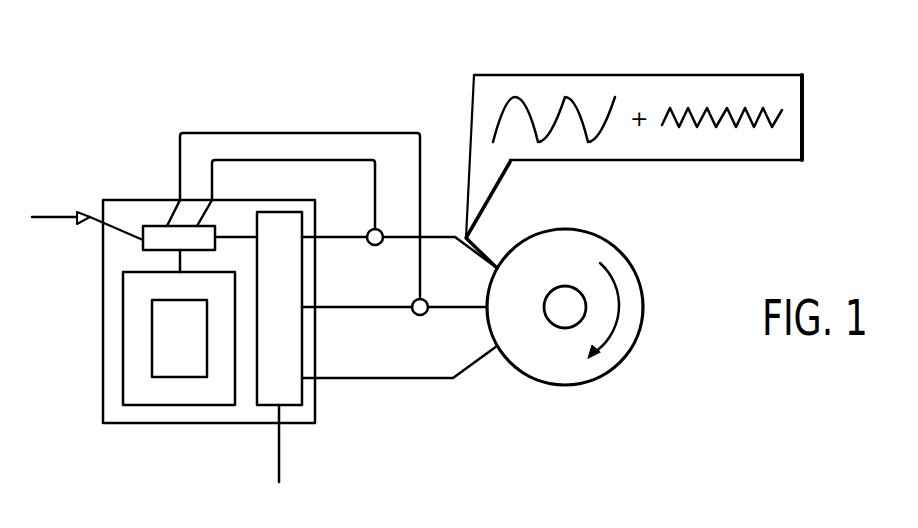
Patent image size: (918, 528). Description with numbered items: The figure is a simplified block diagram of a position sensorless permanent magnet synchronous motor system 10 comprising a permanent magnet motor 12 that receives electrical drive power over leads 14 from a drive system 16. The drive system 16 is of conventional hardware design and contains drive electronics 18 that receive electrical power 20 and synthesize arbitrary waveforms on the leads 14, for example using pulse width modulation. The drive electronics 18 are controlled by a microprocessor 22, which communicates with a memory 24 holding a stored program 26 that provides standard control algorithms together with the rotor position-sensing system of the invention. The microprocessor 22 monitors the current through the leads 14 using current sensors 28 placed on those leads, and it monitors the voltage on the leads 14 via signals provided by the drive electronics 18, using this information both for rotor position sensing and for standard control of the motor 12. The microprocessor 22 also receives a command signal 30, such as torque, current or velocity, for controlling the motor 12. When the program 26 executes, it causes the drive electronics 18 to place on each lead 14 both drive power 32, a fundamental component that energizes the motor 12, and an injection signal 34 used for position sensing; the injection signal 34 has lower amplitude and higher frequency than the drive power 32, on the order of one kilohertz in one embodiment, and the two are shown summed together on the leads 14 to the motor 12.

The position sensorless permanent magnet synchronous motor system 10 is at (117, 148).
The permanent magnet motor 12 is at (599, 237).
The leads 14 is at (477, 256).
The drive system 16 is at (179, 424).
The drive electronics 18 is at (295, 392).
The electrical power 20 is at (279, 455).
The microprocessor 22 is at (150, 246).
The memory 24 is at (123, 286).
The stored program 26 is at (160, 322).
The current sensors 28 is at (414, 300).
The command signal 30 is at (55, 216).
The drive power 32 is at (518, 100).
The injection signal 34 is at (690, 108).